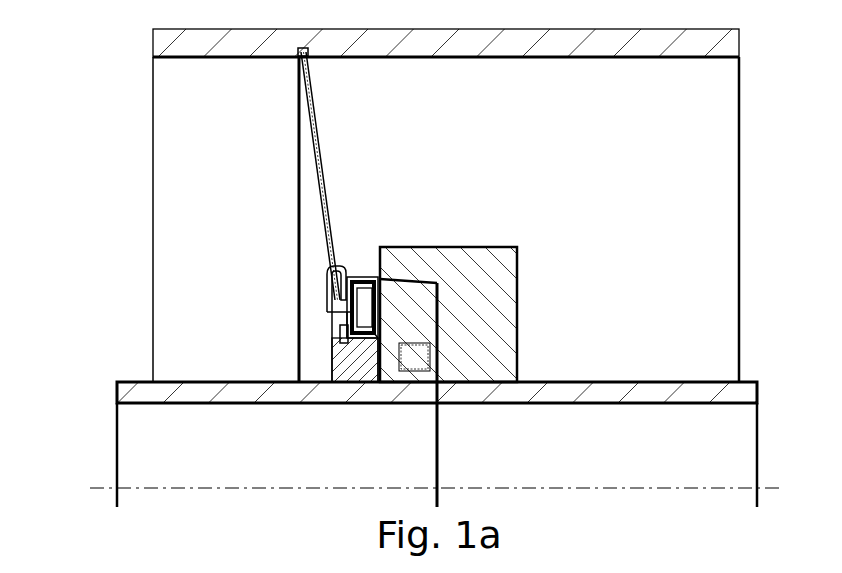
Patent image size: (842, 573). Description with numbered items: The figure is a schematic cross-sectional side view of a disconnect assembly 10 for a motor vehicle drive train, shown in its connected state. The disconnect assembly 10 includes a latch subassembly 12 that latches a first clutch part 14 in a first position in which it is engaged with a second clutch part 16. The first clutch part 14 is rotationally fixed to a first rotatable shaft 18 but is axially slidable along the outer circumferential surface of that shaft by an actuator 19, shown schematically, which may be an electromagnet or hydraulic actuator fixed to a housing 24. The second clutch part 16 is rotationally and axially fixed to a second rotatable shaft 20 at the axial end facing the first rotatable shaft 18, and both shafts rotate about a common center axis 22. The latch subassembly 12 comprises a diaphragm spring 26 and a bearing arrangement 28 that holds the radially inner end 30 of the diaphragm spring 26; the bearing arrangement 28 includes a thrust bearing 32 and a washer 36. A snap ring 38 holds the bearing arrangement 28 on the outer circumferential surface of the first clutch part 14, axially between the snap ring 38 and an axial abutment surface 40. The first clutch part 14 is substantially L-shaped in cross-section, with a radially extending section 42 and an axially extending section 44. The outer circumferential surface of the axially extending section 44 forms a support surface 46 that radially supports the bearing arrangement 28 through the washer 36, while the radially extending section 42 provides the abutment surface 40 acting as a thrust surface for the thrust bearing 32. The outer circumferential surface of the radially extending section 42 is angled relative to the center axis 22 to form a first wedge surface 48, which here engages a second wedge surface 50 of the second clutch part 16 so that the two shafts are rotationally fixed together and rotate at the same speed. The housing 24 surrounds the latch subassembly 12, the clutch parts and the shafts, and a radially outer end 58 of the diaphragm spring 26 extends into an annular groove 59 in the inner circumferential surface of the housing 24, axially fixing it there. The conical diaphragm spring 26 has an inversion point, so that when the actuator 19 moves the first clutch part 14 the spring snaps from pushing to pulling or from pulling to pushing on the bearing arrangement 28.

The disconnect assembly 10 is at (108, 78).
The latch subassembly 12 is at (295, 190).
The first clutch part 14 is at (392, 290).
The second clutch part 16 is at (493, 265).
The first rotatable shaft 18 is at (217, 388).
The actuator 19 is at (414, 357).
The second rotatable shaft 20 is at (640, 385).
The center axis 22 is at (600, 488).
The housing 24 is at (543, 47).
The diaphragm spring 26 is at (323, 212).
The bearing arrangement 28 is at (342, 200).
The radially inner end 30 is at (330, 297).
The thrust bearing 32 is at (360, 258).
The washer 36 is at (330, 281).
The snap ring 38 is at (340, 346).
The axial abutment surface 40 is at (378, 330).
The radially extending section 42 is at (432, 278).
The axially extending section 44 is at (357, 368).
The support surface 46 is at (373, 352).
The first wedge surface 48 is at (430, 293).
The second wedge surface 50 is at (437, 335).
The radially outer end 58 is at (308, 68).
The annular groove 59 is at (296, 52).